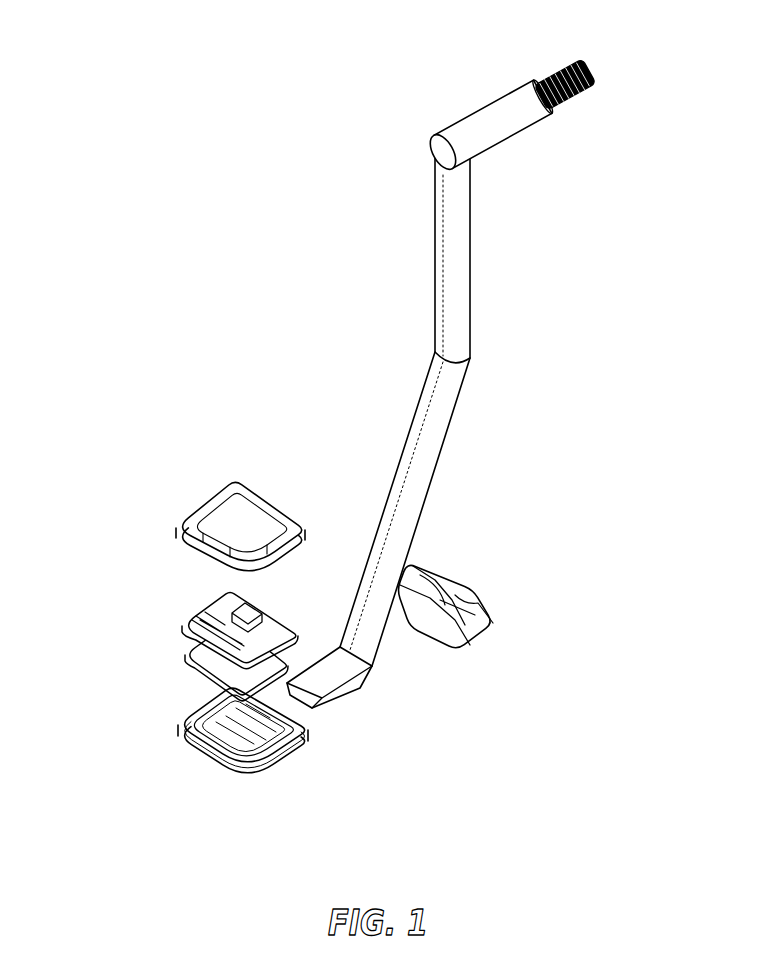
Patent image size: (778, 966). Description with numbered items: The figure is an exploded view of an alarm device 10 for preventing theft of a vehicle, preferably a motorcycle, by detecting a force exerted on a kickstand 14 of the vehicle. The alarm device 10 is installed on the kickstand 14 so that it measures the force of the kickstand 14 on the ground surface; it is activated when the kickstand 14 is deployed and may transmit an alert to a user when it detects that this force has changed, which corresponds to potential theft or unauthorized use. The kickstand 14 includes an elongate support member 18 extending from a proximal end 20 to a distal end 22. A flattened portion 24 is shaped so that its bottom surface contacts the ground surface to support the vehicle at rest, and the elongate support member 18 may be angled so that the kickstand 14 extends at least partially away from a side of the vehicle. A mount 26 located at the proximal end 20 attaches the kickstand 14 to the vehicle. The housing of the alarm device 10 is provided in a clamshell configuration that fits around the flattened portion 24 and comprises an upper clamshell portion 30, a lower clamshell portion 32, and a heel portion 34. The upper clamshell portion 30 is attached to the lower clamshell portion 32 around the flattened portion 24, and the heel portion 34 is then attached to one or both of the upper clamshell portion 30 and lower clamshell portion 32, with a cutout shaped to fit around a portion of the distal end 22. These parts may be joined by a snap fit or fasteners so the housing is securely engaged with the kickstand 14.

The alarm device 10 is at (113, 503).
The kickstand 14 is at (380, 347).
The elongate support member 18 is at (470, 310).
The proximal end 20 is at (435, 185).
The distal end 22 is at (370, 673).
The flattened portion 24 is at (340, 700).
The mount 26 is at (587, 60).
The upper clamshell portion 30 is at (203, 497).
The lower clamshell portion 32 is at (206, 758).
The heel portion 34 is at (493, 620).